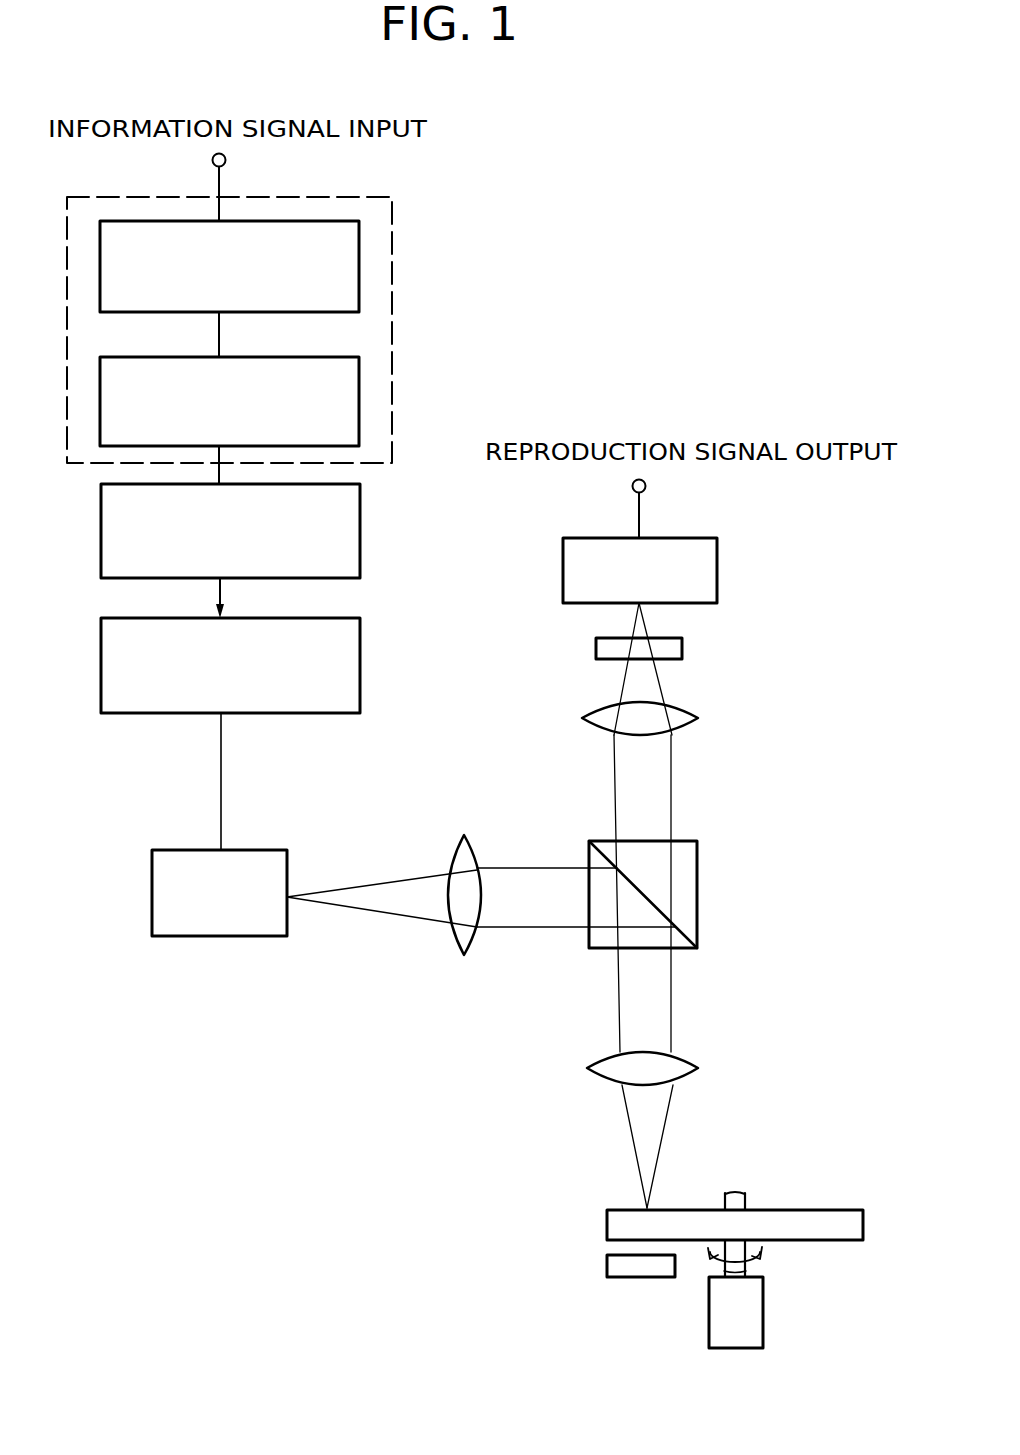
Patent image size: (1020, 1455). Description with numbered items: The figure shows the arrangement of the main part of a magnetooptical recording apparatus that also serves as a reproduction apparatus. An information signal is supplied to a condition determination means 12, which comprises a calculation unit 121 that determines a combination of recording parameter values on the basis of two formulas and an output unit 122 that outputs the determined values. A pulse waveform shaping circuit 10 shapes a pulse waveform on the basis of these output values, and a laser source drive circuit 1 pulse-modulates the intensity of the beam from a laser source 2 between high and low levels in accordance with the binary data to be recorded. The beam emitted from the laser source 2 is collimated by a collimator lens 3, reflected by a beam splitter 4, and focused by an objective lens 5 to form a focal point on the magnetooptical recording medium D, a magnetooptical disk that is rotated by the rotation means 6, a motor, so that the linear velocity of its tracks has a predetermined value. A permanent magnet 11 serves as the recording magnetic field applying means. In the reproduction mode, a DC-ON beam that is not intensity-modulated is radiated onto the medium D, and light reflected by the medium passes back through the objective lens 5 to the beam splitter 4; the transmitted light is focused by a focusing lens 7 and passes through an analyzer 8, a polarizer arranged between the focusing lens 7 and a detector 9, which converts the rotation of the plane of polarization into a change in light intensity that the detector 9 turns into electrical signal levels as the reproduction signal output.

The condition determination means 12 is at (394, 220).
The calculation unit 121 is at (359, 292).
The output unit 122 is at (359, 402).
The pulse waveform shaping circuit 10 is at (360, 545).
The laser source drive circuit 1 is at (360, 665).
The laser source 2 is at (270, 852).
The collimator lens 3 is at (473, 850).
The beam splitter 4 is at (697, 880).
The objective lens 5 is at (693, 1062).
The rotation means 6 is at (752, 1327).
The focusing lens 7 is at (685, 717).
The analyzer 8 is at (682, 650).
The detector 9 is at (717, 585).
The permanent magnet 11 is at (607, 1266).
The magnetooptical recording medium D is at (823, 1217).